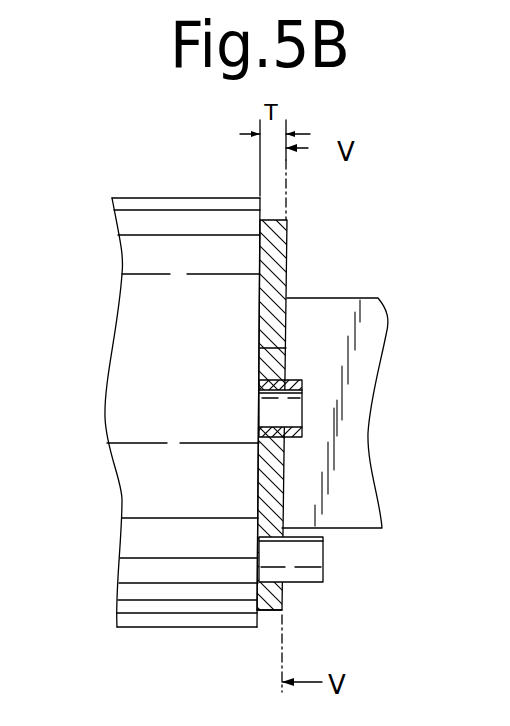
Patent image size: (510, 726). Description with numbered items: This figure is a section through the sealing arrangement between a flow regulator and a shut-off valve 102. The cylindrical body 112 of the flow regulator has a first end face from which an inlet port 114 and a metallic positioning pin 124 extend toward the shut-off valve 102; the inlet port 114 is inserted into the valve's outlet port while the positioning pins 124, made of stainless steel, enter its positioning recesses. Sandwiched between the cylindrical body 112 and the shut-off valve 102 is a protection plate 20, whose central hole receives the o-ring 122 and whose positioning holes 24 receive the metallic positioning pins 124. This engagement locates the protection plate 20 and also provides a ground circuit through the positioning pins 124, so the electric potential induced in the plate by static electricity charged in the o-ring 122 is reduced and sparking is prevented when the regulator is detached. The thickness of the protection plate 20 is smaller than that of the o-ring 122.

The cylindrical body 112 is at (173, 205).
The protection plate 20 is at (287, 235).
The inlet port 114 is at (294, 378).
The o-ring 122 is at (258, 362).
The positioning holes 24 is at (258, 530).
The positioning pins 124 is at (323, 560).
The shut-off valve 102 is at (280, 630).